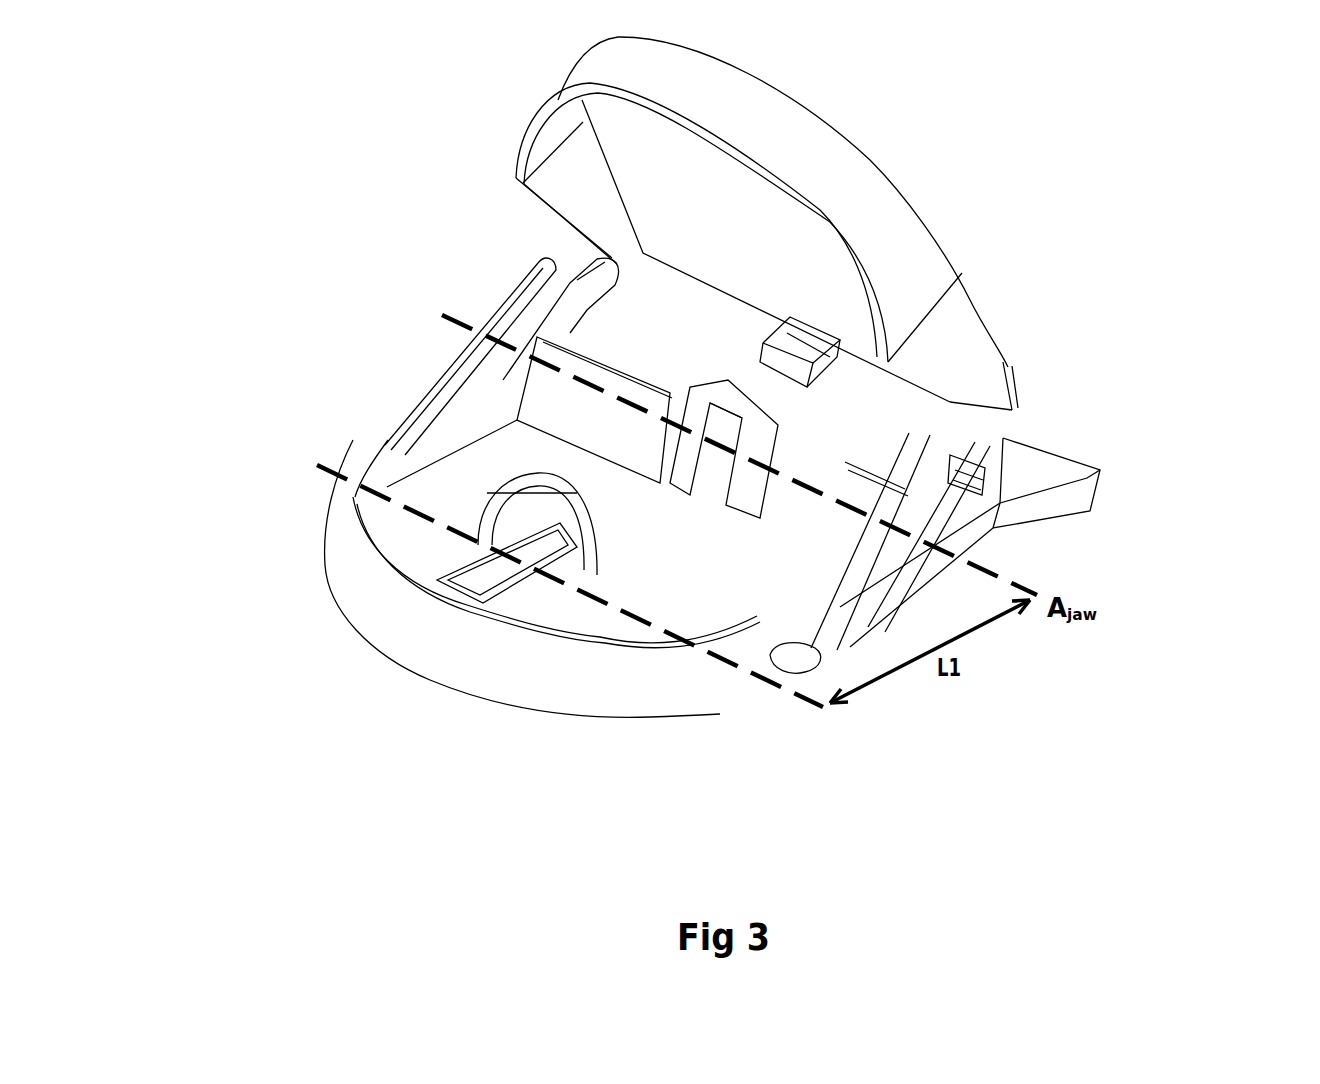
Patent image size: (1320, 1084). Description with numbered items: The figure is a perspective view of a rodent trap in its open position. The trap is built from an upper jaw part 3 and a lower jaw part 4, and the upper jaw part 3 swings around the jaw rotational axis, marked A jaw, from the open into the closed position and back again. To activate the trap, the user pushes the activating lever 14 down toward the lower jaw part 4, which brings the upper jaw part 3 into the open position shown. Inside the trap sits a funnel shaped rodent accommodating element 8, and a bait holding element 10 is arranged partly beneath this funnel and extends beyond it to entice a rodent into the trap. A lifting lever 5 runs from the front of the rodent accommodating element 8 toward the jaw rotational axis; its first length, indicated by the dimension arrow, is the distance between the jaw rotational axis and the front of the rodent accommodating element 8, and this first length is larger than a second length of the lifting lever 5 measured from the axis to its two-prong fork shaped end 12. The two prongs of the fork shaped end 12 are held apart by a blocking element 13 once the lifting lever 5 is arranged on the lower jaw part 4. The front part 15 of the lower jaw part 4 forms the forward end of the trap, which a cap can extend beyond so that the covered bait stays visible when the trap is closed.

The upper jaw part 3 is at (557, 94).
The lower jaw part 4 is at (350, 487).
The lifting lever 5 is at (688, 527).
The rodent accommodating element 8 is at (595, 563).
The bait holding element 10 is at (463, 562).
The two-prong fork shaped end 12 is at (713, 432).
The blocking element 13 is at (748, 447).
The activating lever 14 is at (1013, 369).
The front part 15 is at (415, 633).